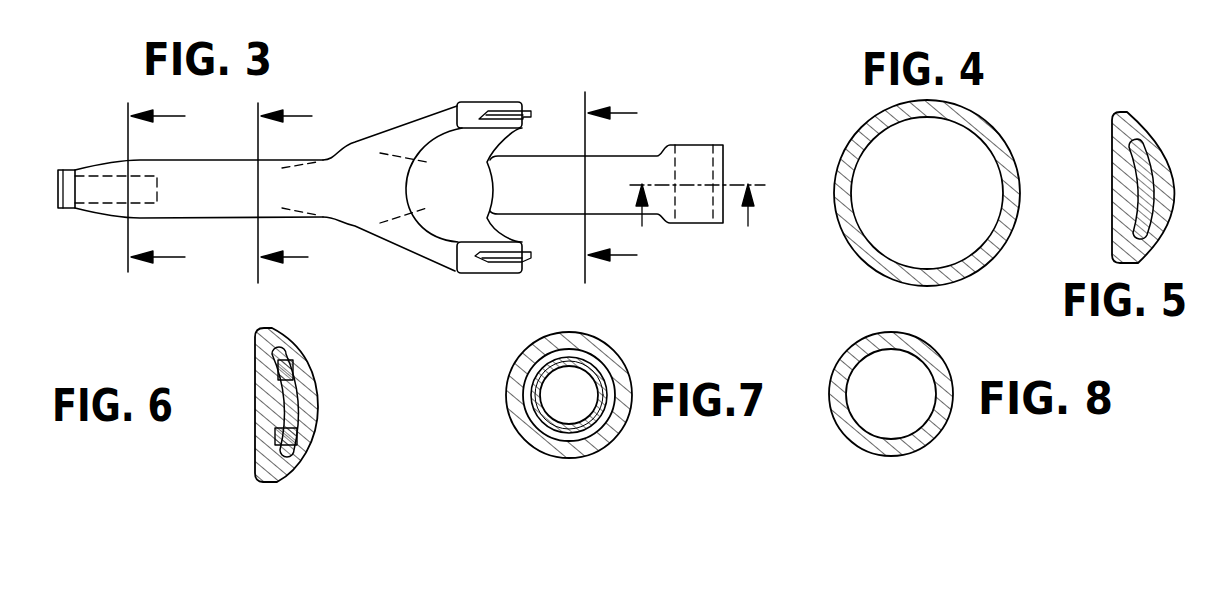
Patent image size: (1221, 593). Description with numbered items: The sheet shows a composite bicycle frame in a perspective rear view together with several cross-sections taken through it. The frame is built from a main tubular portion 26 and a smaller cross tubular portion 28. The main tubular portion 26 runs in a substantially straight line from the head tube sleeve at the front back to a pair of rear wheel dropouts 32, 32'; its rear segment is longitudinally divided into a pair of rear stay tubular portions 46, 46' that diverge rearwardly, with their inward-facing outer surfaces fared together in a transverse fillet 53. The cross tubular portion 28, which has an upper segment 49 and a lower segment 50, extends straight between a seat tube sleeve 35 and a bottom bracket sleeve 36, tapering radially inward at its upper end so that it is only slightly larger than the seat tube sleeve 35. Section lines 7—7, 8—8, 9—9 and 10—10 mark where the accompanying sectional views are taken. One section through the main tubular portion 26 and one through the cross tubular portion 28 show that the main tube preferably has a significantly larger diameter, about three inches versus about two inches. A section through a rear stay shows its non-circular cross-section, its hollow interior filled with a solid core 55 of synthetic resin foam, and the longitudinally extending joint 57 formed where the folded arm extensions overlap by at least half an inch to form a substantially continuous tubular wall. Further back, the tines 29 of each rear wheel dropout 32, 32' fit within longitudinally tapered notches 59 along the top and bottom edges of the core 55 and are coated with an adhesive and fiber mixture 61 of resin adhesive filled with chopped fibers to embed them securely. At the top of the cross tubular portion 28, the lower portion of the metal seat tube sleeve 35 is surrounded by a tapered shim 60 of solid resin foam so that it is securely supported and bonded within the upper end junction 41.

In FIG. 3, the section line 7— 7 is at (147, 187).
In FIG. 3, the section line 8— 8 is at (276, 193).
In FIG. 3, the section line 9— 9 is at (601, 187).
In FIG. 3, the section line 10— 10 is at (692, 194).
In FIG. 4, the main tubular portion 26 is at (860, 143).
In FIG. 8, the cross tubular portion 28 is at (850, 360).
In FIG. 6, the tines 29 is at (290, 365).
In FIG. 3, the rear wheel dropout 32 is at (494, 277).
In FIG. 3, the rear wheel dropout 32' is at (494, 93).
In FIG. 3, the seat tube sleeve 35 is at (93, 174).
In FIG. 7, the seat tube sleeve 35 is at (563, 362).
In FIG. 3, the bottom bracket sleeve 36 is at (675, 203).
In FIG. 7, the upper end junction 41 is at (517, 378).
In FIG. 3, the rear stay tubular portion 46 is at (389, 247).
In FIG. 5, the rear stay tubular portion 46 is at (1143, 160).
In FIG. 6, the rear stay tubular portion 46 is at (278, 390).
In FIG. 3, the rear stay tubular portion 46' is at (390, 125).
In FIG. 3, the upper segment 49 is at (287, 187).
In FIG. 3, the lower segment 50 is at (523, 170).
In FIG. 3, the transverse fillet 53 is at (422, 187).
In FIG. 5, the solid core 55 is at (1143, 183).
In FIG. 6, the solid core 55 is at (293, 392).
In FIG. 5, the longitudinally extending joint 57 is at (1133, 178).
In FIG. 6, the longitudinally extending joint 57 is at (232, 405).
In FIG. 6, the longitudinally tapered notch 59 is at (295, 427).
In FIG. 7, the tapered shim 60 is at (595, 365).
In FIG. 6, the adhesive and fiber mixture 61 is at (275, 352).